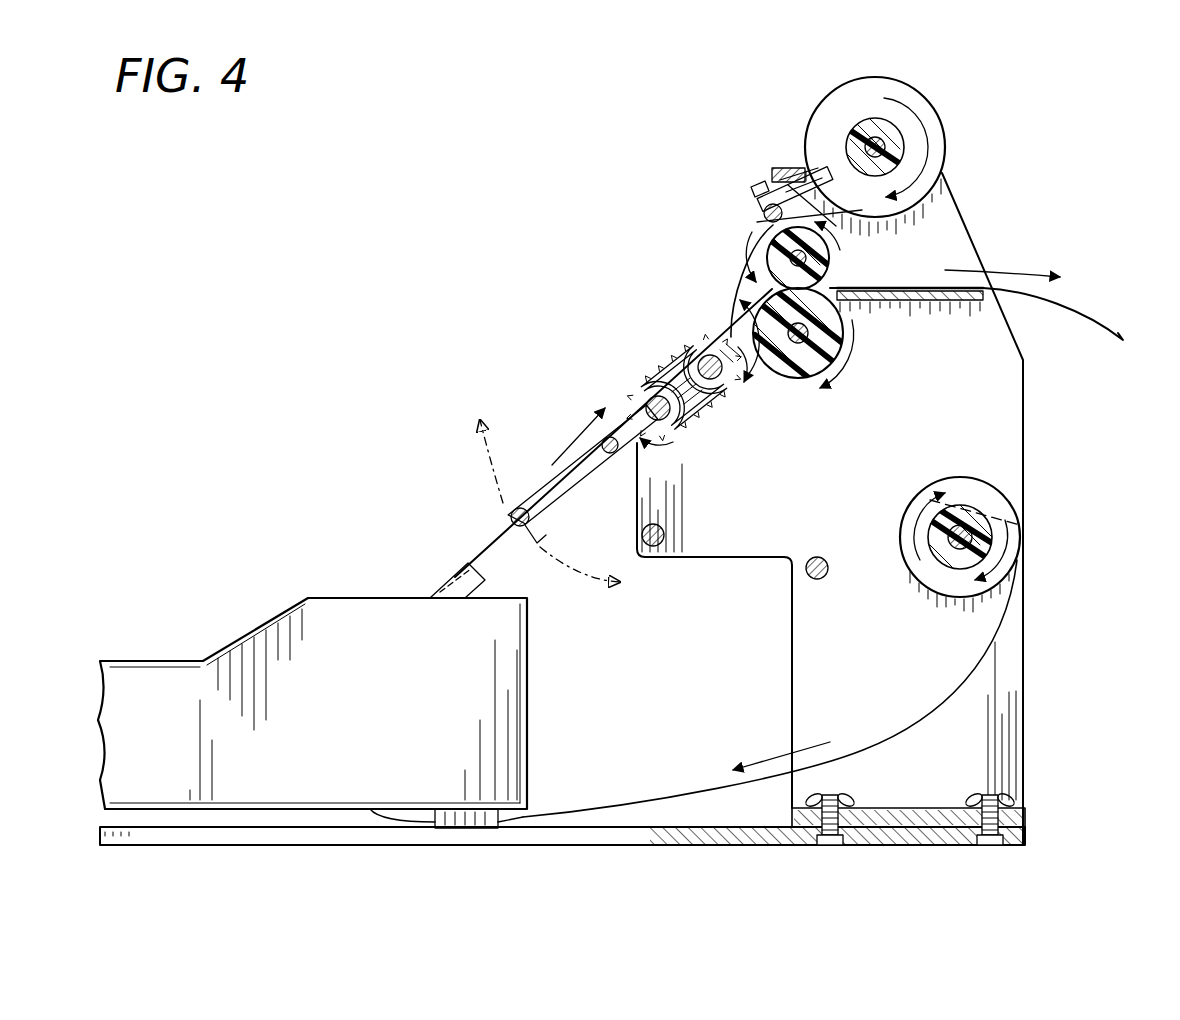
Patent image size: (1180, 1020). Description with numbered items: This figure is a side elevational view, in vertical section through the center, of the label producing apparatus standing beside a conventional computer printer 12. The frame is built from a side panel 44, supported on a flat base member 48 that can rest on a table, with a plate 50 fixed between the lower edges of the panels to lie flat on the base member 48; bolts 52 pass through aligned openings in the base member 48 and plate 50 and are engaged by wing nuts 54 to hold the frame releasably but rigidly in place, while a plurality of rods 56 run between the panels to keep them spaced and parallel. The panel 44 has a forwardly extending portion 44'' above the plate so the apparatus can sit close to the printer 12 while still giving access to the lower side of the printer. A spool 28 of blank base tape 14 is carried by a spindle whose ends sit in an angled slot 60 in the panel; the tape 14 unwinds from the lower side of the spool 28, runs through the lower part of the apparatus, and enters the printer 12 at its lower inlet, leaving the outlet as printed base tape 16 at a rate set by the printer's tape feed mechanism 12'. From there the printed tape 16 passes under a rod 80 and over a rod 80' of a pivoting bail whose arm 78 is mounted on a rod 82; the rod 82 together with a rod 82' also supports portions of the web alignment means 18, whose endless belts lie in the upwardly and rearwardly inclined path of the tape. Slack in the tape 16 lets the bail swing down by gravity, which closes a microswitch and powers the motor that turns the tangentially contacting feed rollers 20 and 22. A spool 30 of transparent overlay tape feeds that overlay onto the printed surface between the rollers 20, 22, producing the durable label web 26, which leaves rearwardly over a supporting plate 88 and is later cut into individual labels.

The computer printer 12 is at (312, 683).
The tape feed mechanism 12' is at (426, 551).
The blank base tape 14 is at (580, 812).
The printed base tape 16 is at (500, 543).
The web alignment means 18 is at (695, 398).
The feed roller 20 is at (830, 267).
The feed roller 22 is at (842, 340).
The label web 26 is at (1090, 310).
The base tape spool 28 is at (968, 485).
The overlay tape spool 30 is at (852, 100).
The side panel 44 is at (889, 509).
The forwardly extending portion 44'' is at (714, 592).
The base member 48 is at (560, 846).
The plate 50 is at (1020, 817).
The bolts 52 is at (965, 815).
The wing nuts 54 is at (850, 797).
The rods 56 is at (765, 215).
The slot 60 is at (1018, 503).
The arm 78 is at (540, 470).
The rod 80 is at (520, 501).
The rod 80' is at (590, 487).
The rod 82 is at (663, 375).
The rod 82' is at (683, 312).
The guide bar 88 is at (922, 303).